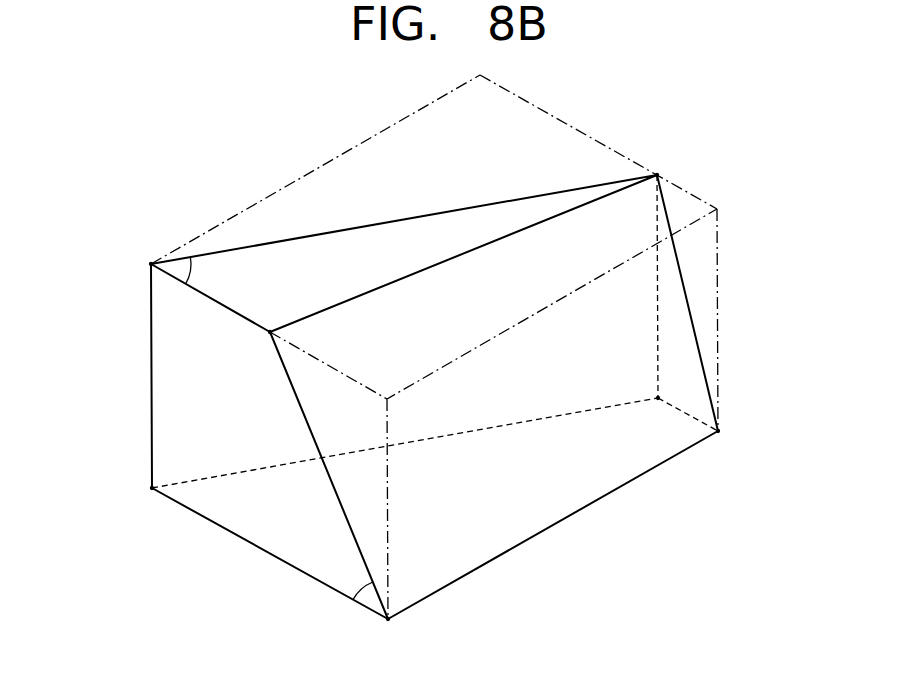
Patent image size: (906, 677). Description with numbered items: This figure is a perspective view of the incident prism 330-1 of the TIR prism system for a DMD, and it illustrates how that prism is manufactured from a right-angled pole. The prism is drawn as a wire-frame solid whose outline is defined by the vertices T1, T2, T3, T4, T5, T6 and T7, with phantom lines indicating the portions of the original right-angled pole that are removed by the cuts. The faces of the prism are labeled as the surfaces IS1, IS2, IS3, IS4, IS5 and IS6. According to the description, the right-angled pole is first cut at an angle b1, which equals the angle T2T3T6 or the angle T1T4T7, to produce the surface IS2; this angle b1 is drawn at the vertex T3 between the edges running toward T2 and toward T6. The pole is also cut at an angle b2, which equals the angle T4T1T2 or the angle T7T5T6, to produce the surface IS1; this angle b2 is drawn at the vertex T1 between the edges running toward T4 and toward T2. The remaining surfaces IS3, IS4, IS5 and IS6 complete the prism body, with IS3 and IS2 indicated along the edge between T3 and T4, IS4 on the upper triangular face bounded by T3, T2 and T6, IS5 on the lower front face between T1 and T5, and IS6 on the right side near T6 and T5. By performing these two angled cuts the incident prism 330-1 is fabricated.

The incident prism 330-1 is at (461, 253).
The surface IS1 is at (252, 542).
The surface IS2 is at (165, 418).
The surface IS3 is at (165, 358).
The surface IS4 is at (417, 230).
The surface IS5 is at (623, 468).
The surface IS6 is at (693, 370).
The vertex T1 is at (395, 637).
The vertex T2 is at (270, 332).
The vertex T3 is at (137, 257).
The vertex T4 is at (139, 490).
The vertex T5 is at (733, 443).
The vertex T6 is at (669, 167).
The vertex T7 is at (644, 384).
The angle b1 is at (204, 272).
The angle b2 is at (351, 580).